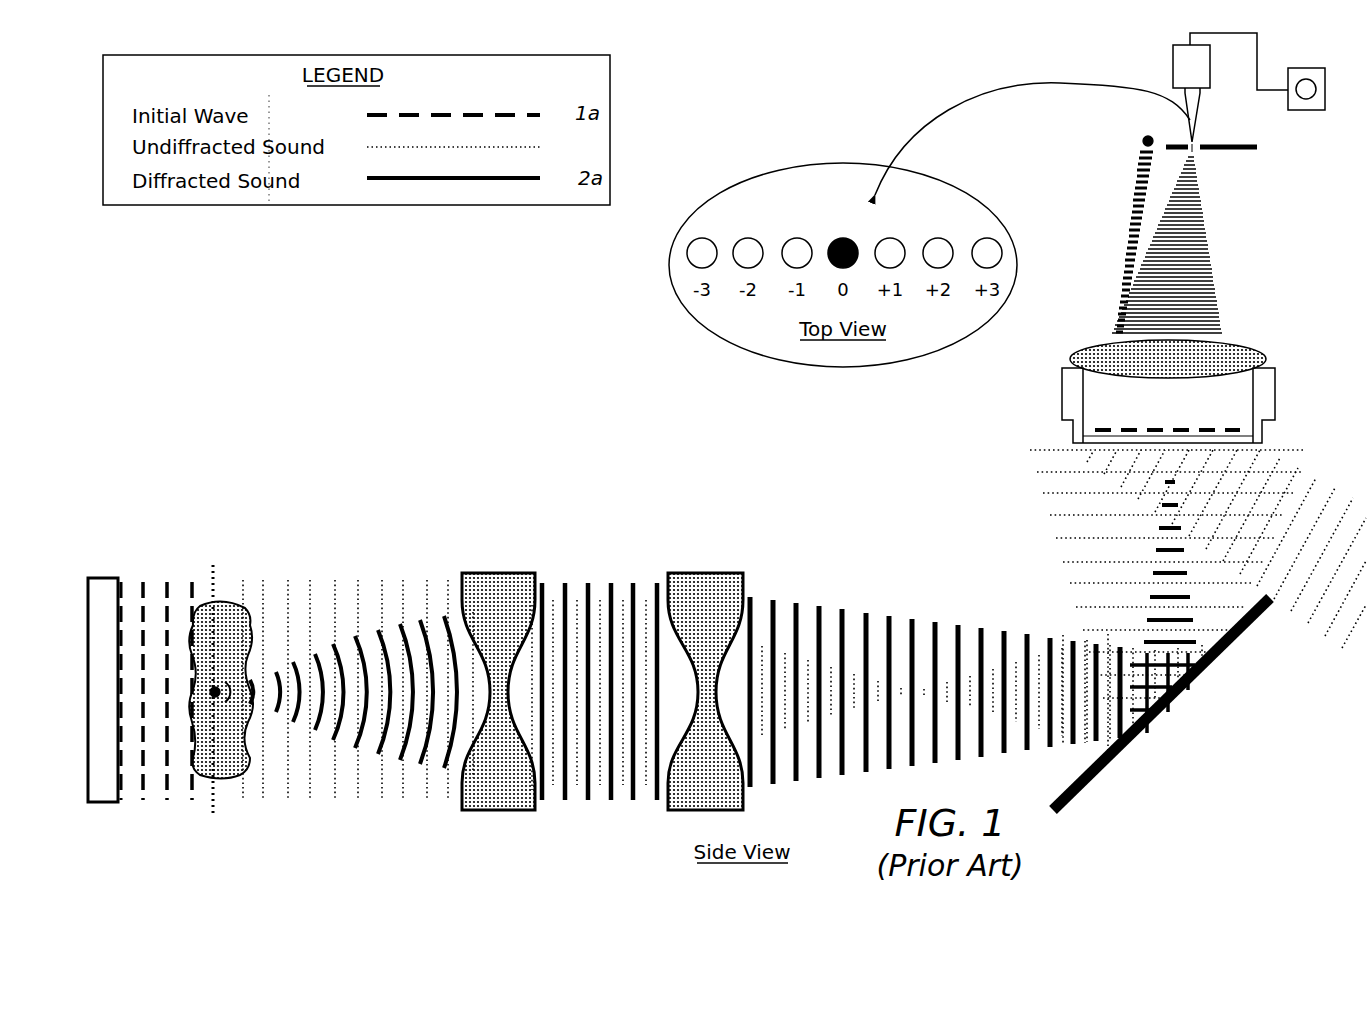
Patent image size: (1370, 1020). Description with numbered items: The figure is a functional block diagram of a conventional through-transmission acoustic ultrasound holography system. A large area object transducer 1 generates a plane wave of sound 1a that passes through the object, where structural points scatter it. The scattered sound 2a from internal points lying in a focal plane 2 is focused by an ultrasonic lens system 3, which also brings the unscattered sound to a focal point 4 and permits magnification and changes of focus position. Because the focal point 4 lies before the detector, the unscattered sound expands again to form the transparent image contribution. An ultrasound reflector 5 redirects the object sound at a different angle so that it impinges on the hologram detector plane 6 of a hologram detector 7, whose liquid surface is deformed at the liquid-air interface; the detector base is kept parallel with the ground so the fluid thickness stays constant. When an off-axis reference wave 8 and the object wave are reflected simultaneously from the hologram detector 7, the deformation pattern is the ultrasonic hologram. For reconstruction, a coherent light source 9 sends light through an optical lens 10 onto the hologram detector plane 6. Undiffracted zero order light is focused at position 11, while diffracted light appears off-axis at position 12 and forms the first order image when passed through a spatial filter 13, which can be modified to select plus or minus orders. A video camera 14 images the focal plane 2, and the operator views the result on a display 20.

The large area object transducer 1 is at (104, 672).
The plane wave of sound 1a is at (152, 572).
The focal plane 2 is at (221, 678).
The scattered sound 2a is at (413, 607).
The ultrasonic lens system 3 is at (602, 675).
The focal point 4 is at (920, 683).
The ultrasound reflector 5 is at (1165, 693).
The hologram detector plane 6 is at (1248, 430).
The hologram detector 7 is at (1060, 395).
The reference wave 8 is at (1226, 549).
The coherent light source 9 is at (1134, 229).
The optical lens 10 is at (1245, 351).
The position of zero order light 11 is at (1009, 192).
The position of first order light 12 is at (1049, 192).
The spatial filter 13 is at (1230, 164).
The video camera 14 is at (1170, 68).
The display 20 is at (1306, 105).